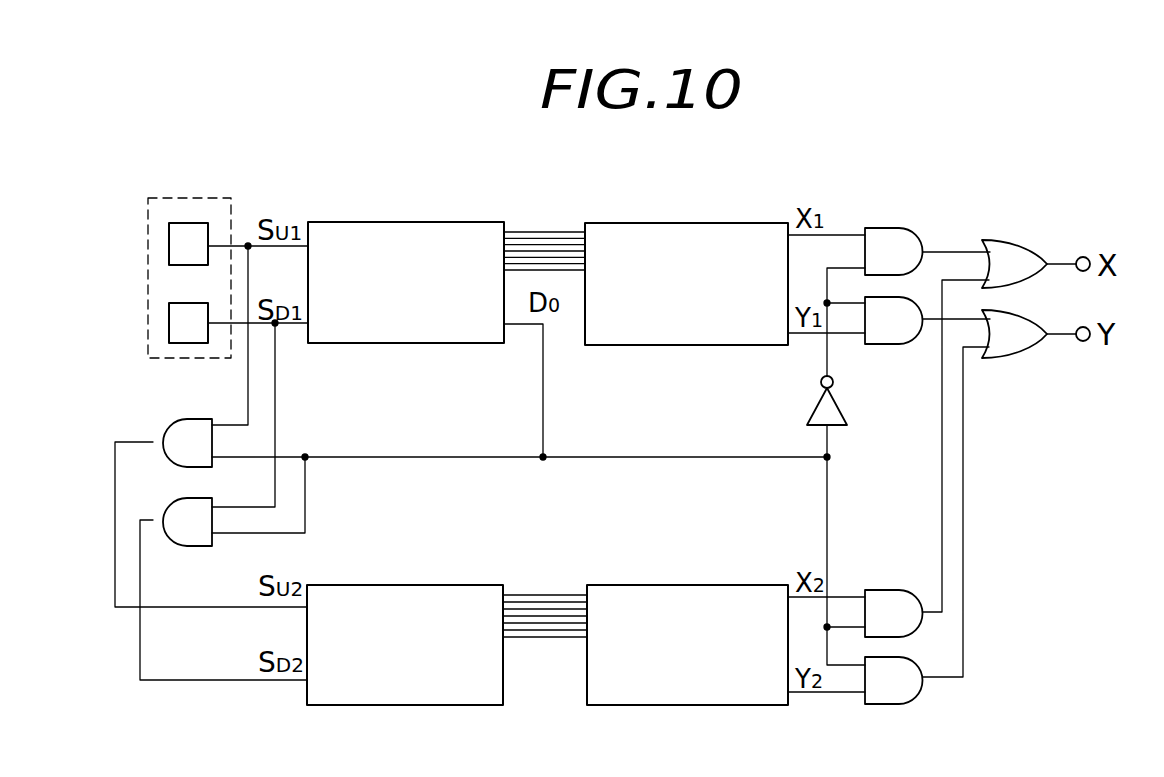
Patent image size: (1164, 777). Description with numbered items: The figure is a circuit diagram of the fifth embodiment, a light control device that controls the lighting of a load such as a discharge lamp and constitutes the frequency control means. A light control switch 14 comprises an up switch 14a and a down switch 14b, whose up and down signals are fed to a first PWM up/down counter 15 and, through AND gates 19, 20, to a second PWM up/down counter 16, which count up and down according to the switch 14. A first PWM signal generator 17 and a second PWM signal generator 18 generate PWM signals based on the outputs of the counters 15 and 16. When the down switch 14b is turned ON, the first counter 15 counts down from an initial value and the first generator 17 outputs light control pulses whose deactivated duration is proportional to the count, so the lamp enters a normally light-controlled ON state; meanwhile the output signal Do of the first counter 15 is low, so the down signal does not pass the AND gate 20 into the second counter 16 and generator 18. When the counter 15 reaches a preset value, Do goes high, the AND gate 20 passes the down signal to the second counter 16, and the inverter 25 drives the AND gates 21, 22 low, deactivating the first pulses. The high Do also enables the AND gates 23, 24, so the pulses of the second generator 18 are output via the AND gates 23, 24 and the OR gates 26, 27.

The light control switch 14 is at (210, 196).
The up switch 14a is at (169, 246).
The down switch 14b is at (169, 323).
The first PWM up/down counter 15 is at (395, 222).
The second PWM up/down counter 16 is at (400, 585).
The first PWM signal generator 17 is at (690, 223).
The second PWM signal generator 18 is at (662, 585).
The AND gate 19 is at (172, 419).
The AND gate 20 is at (180, 546).
The AND gate 21 is at (905, 228).
The AND gate 22 is at (900, 344).
The AND gate 23 is at (888, 590).
The AND gate 24 is at (890, 704).
The inverter 25 is at (847, 415).
The OR gate 26 is at (1020, 240).
The OR gate 27 is at (1020, 358).